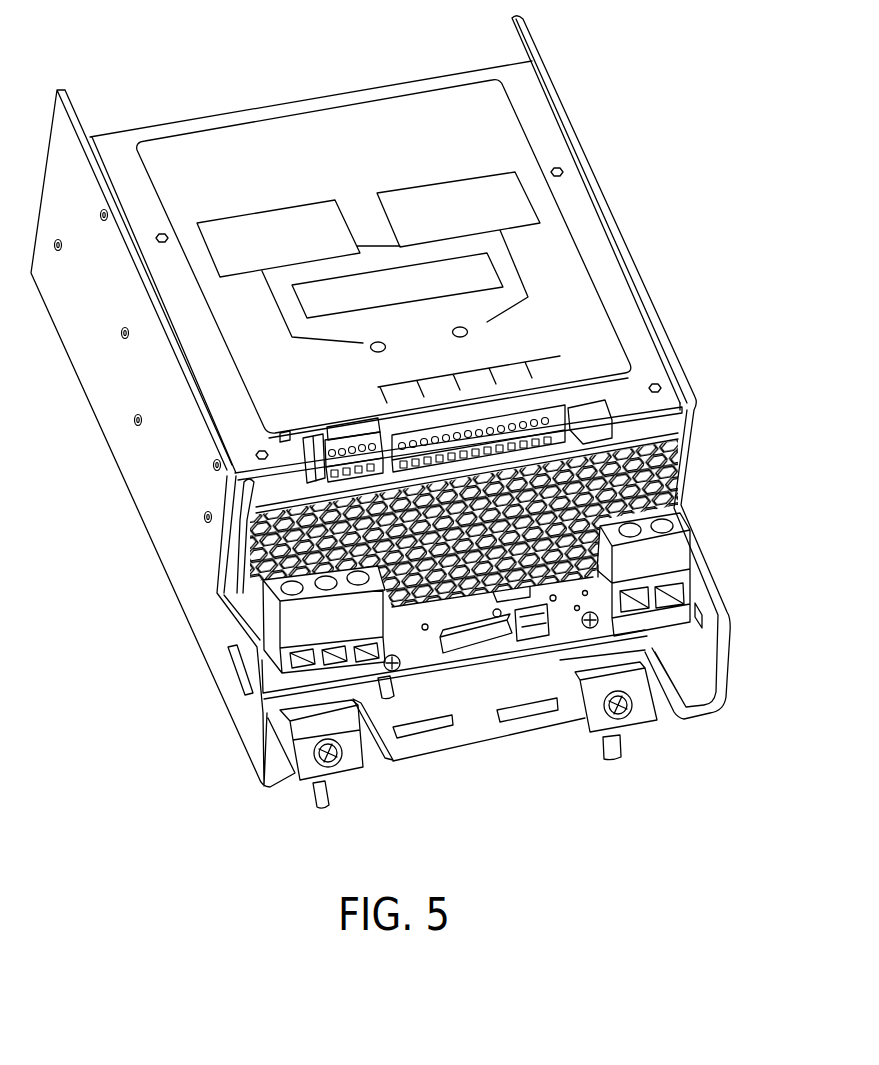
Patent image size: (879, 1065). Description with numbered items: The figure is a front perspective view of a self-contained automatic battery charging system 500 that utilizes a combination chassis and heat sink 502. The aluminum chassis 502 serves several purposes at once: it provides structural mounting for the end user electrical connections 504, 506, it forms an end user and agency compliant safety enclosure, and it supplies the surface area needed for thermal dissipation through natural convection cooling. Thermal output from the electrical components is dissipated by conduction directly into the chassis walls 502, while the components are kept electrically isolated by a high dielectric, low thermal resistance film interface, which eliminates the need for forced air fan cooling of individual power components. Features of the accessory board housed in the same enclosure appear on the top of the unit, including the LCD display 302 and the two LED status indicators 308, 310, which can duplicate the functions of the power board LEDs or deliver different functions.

The LCD display 302 is at (483, 275).
The LED status indicator 308 is at (371, 347).
The LED status indicator 310 is at (467, 331).
The self-contained automatic battery charging system 500 is at (404, 443).
The combination chassis and heat sink 502 is at (155, 504).
The end user electrical connection 504 is at (265, 691).
The end user electrical connection 506 is at (688, 525).